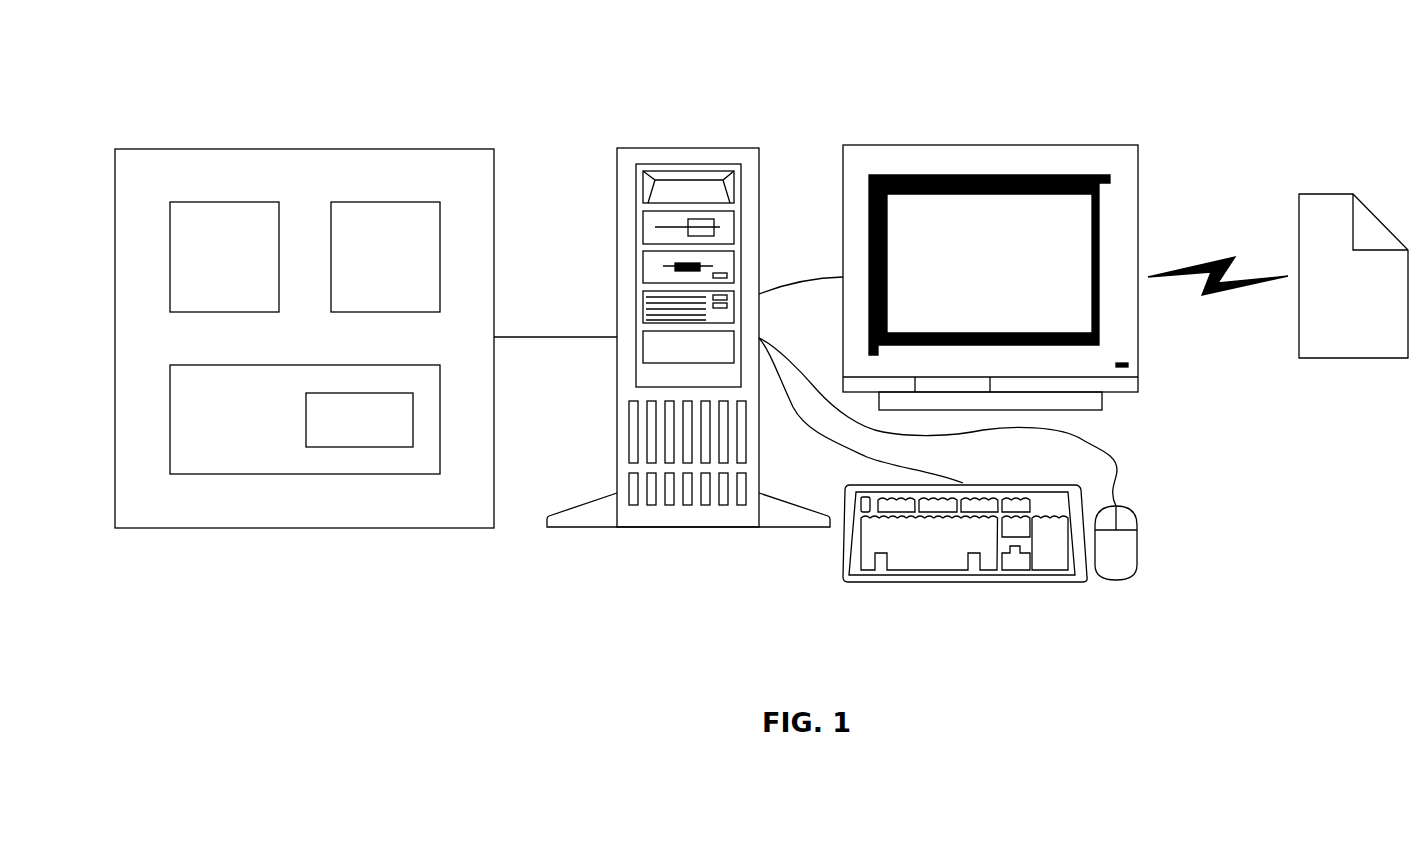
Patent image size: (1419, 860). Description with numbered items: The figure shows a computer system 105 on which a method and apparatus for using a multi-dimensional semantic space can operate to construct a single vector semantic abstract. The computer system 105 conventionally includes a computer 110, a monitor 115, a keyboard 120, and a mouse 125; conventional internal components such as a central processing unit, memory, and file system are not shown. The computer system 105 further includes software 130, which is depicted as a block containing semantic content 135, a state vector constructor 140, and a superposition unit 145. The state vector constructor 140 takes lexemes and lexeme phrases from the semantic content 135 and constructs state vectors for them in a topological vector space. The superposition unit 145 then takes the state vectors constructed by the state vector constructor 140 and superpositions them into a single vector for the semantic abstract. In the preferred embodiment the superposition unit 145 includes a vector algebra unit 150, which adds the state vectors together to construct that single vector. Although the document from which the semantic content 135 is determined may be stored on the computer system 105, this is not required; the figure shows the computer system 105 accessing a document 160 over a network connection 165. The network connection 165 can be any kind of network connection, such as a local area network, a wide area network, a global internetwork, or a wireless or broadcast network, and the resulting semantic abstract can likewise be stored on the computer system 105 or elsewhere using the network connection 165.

The computer system 105 is at (580, 50).
The computer 110 is at (660, 148).
The monitor 115 is at (883, 145).
The keyboard 120 is at (884, 582).
The mouse 125 is at (1137, 540).
The software 130 is at (157, 149).
The semantic content 135 is at (224, 202).
The state vector constructor 140 is at (384, 202).
The superposition unit 145 is at (224, 365).
The vector algebra unit 150 is at (359, 447).
The document 160 is at (1340, 194).
The network connection 165 is at (1232, 258).